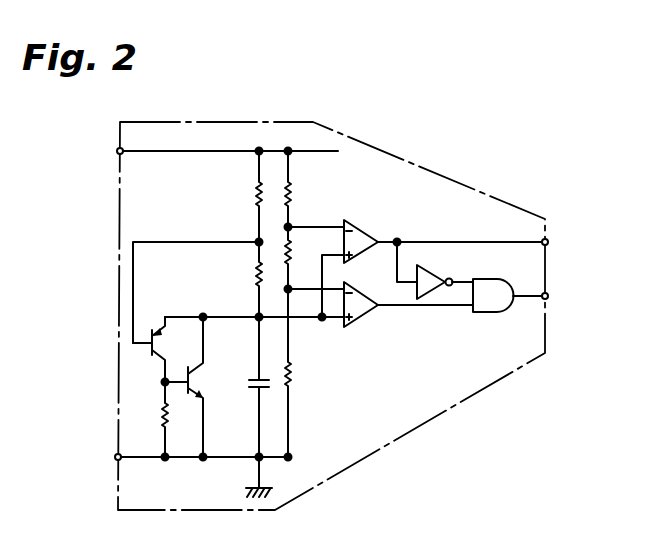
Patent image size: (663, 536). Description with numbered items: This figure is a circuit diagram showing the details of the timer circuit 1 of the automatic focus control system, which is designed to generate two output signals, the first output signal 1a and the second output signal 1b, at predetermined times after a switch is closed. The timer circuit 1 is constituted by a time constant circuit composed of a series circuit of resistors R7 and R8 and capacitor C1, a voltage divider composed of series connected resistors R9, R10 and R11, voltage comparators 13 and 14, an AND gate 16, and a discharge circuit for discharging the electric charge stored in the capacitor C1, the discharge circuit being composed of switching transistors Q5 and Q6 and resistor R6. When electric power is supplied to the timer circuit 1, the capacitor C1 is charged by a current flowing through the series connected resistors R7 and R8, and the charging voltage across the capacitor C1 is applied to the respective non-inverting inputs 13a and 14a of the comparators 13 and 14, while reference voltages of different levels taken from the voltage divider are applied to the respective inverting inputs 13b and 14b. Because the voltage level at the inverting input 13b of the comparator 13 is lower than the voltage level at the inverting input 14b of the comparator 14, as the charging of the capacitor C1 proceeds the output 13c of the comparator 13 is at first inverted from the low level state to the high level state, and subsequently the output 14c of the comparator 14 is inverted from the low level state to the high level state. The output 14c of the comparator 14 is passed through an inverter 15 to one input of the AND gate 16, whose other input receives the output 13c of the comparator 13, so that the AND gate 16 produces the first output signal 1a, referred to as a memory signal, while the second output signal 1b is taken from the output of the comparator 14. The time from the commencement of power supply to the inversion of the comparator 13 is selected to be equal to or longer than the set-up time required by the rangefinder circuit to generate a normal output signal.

The timer circuit 1 is at (403, 437).
The first output signal 1a is at (520, 296).
The second output signal 1b is at (498, 242).
The voltage comparator 13 is at (364, 313).
The non-inverting input of comparator 13 13a is at (334, 320).
The inverting input of comparator 13 13b is at (303, 291).
The output of comparator 13 13c is at (392, 306).
The voltage comparator 14 is at (364, 232).
The non-inverting input of comparator 14 14a is at (327, 262).
The inverting input of comparator 14 14b is at (325, 227).
The output of comparator 14 14c is at (392, 241).
The inverter 15 is at (430, 270).
The AND gate 16 is at (497, 313).
The resistor R6 is at (165, 412).
The resistor R7 is at (257, 193).
The resistor R8 is at (256, 276).
The resistor R9 is at (291, 192).
The resistor R10 is at (290, 250).
The resistor R11 is at (290, 380).
The capacitor C1 is at (252, 387).
The switching transistor Q5 is at (164, 349).
The switching transistor Q6 is at (197, 387).